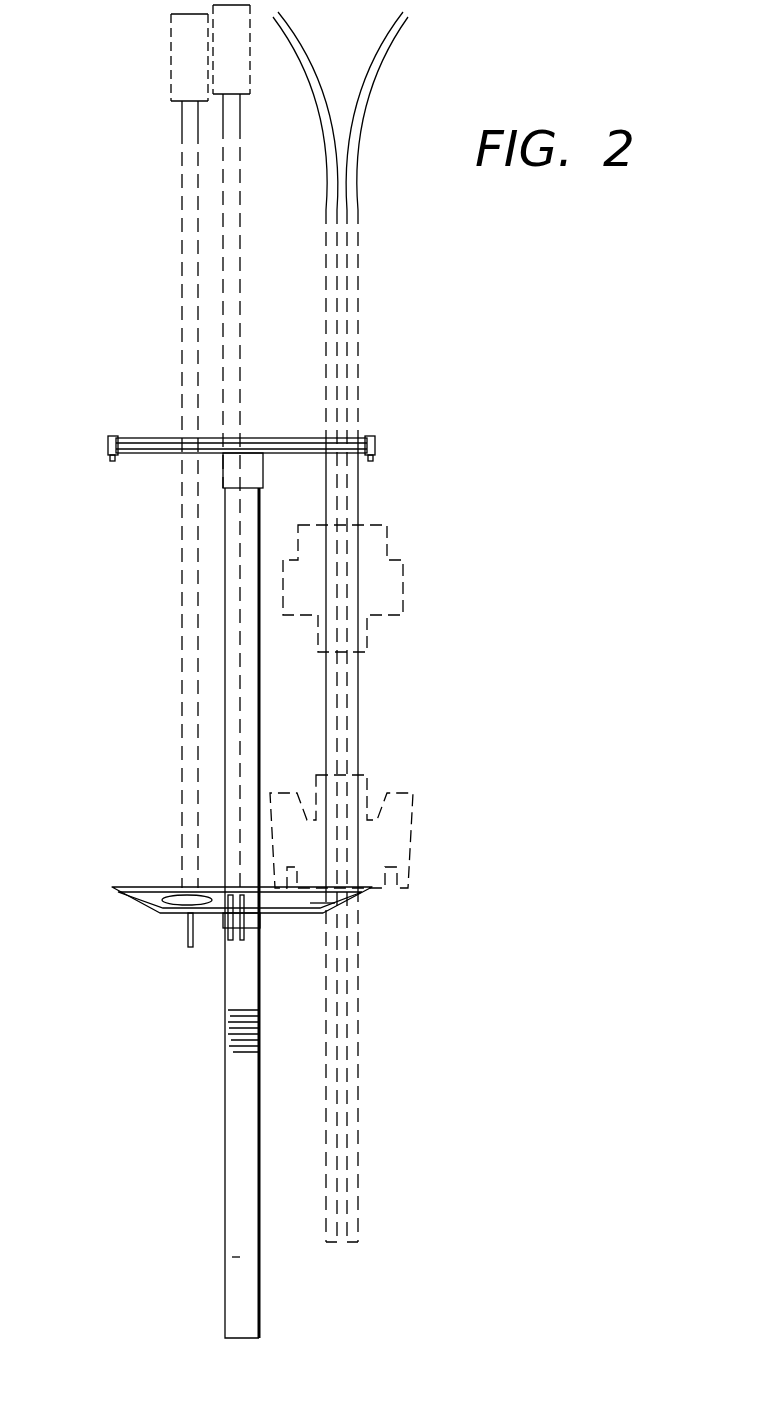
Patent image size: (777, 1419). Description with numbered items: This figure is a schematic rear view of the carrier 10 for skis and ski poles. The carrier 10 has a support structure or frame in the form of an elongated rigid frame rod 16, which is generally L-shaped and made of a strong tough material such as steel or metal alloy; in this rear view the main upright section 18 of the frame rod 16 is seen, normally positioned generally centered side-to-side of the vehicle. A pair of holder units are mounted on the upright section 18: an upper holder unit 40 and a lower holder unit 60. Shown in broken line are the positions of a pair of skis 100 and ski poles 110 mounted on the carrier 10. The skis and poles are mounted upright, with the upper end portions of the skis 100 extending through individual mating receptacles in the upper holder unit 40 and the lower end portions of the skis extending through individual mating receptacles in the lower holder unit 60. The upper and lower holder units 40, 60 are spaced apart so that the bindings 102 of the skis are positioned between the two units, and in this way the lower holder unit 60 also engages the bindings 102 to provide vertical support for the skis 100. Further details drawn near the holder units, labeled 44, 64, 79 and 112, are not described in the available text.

The carrier 10 is at (245, 887).
The frame rod 16 is at (226, 1152).
The main upright section 18 is at (240, 1257).
The upper holder unit 40 is at (148, 458).
The upper block 44 is at (223, 483).
The lower holder unit 60 is at (143, 910).
The lower block 64 is at (258, 925).
The slot 79 is at (335, 904).
The skis 100 is at (335, 250).
The bindings 102 is at (405, 795).
The ski poles 110 is at (224, 225).
The collar 112 is at (175, 905).